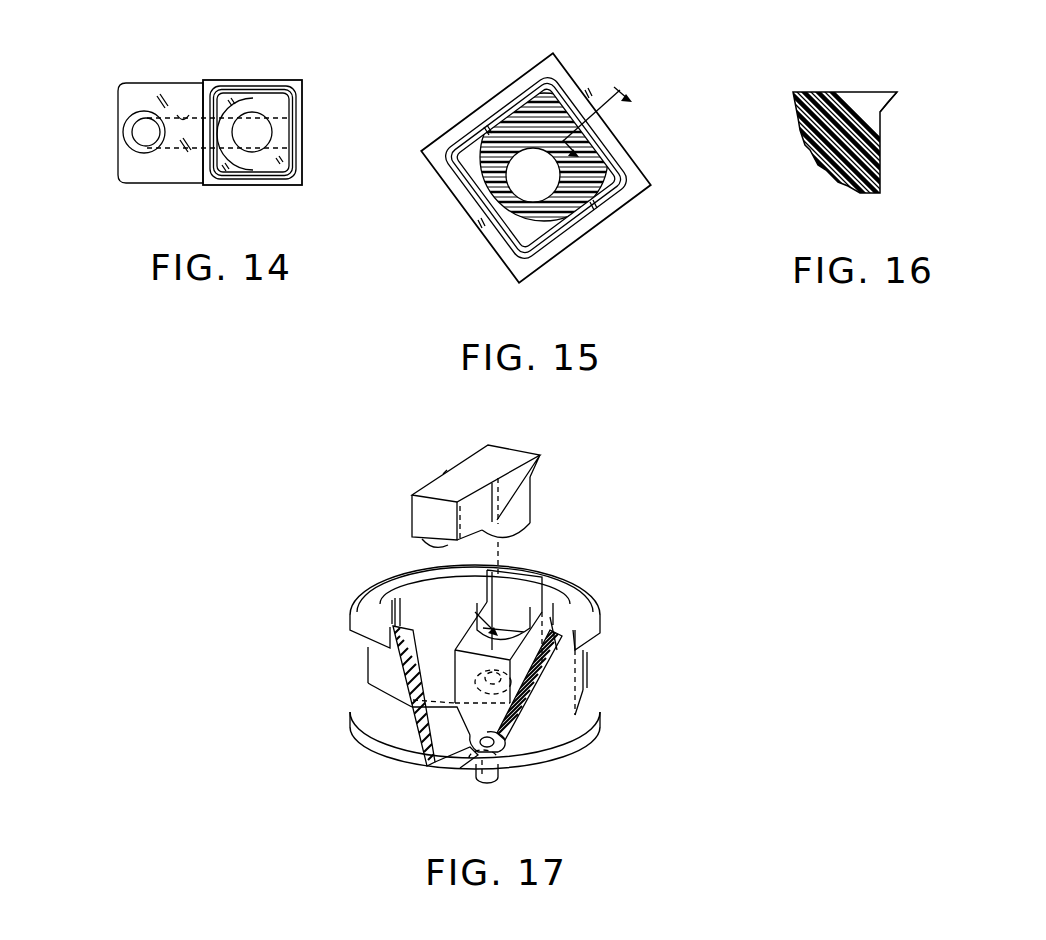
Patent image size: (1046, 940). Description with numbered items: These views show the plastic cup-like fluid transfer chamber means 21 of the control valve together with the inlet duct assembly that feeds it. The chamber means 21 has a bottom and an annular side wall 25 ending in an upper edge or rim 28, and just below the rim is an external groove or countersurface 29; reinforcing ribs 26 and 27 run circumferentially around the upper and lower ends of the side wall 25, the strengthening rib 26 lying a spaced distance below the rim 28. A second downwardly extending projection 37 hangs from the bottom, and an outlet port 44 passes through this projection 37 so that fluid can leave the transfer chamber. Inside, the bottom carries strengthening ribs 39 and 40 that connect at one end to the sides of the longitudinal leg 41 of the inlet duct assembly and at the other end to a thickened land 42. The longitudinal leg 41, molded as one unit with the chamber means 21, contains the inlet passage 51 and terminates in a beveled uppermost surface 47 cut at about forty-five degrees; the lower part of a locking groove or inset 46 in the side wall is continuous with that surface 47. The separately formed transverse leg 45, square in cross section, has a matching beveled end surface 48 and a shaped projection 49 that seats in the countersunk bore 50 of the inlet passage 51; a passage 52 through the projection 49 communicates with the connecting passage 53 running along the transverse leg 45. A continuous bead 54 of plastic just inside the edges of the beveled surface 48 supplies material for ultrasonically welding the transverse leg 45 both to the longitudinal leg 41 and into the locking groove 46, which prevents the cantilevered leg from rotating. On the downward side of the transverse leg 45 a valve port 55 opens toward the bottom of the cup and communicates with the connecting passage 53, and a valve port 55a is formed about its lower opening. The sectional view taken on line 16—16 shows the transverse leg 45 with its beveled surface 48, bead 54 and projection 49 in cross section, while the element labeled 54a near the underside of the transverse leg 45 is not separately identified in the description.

In FIG. 15, the section line 16 is at (586, 111).
In FIG. 17, the fluid transfer chamber means 21 is at (600, 662).
In FIG. 17, the annular side wall 25 is at (413, 658).
In FIG. 17, the reinforcing rib 26 is at (360, 636).
In FIG. 17, the reinforcing rib 27 is at (358, 718).
In FIG. 17, the upper edge or rim 28 is at (402, 617).
In FIG. 17, the external groove or countersurface 29 is at (357, 612).
In FIG. 17, the second downwardly extending projection 37 is at (477, 776).
In FIG. 17, the strengthening rib 39 is at (483, 733).
In FIG. 17, the strengthening rib 40 is at (440, 703).
In FIG. 17, the longitudinal leg 41 is at (533, 683).
In FIG. 17, the thickened section or land 42 is at (470, 746).
In FIG. 17, the outlet passage or port 44 is at (497, 758).
In FIG. 14, the transverse leg 45 is at (214, 72).
In FIG. 15, the transverse leg 45 is at (458, 135).
In FIG. 16, the transverse leg 45 is at (836, 84).
In FIG. 17, the transverse leg 45 is at (413, 478).
In FIG. 17, the locking groove 46 is at (520, 587).
In FIG. 17, the uppermost end or surface 47 is at (536, 614).
In FIG. 14, the beveled surface 48 is at (290, 86).
In FIG. 15, the beveled surface 48 is at (500, 118).
In FIG. 16, the beveled surface 48 is at (895, 97).
In FIG. 14, the shaped projection 49 is at (253, 103).
In FIG. 15, the shaped projection 49 is at (540, 123).
In FIG. 16, the shaped projection 49 is at (876, 168).
In FIG. 17, the shaped projection 49 is at (523, 508).
In FIG. 17, the shaped countersunk bore 50 is at (472, 613).
In FIG. 17, the inlet passage 51 is at (481, 684).
In FIG. 14, the passage 52 is at (257, 148).
In FIG. 15, the passage 52 is at (547, 190).
In FIG. 14, the connecting passage 53 is at (218, 128).
In FIG. 14, the bead 54 is at (298, 108).
In FIG. 15, the bead 54 is at (612, 176).
In FIG. 16, the bead 54 is at (891, 105).
In FIG. 17, the lip 54a is at (426, 541).
In FIG. 14, the valve port 55 is at (131, 132).
In FIG. 14, the valve port 55a is at (131, 149).